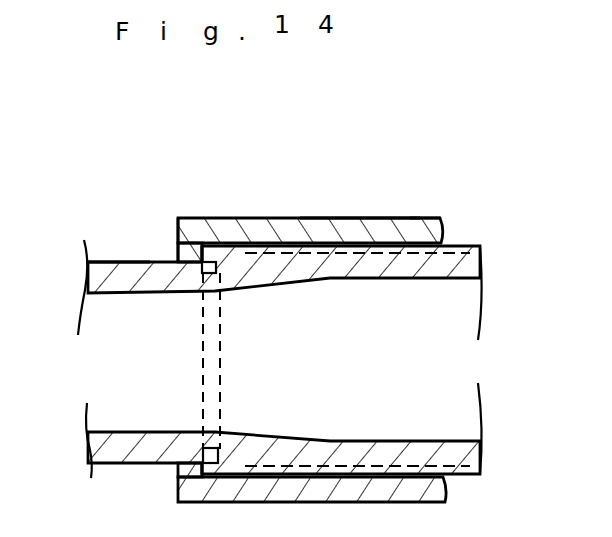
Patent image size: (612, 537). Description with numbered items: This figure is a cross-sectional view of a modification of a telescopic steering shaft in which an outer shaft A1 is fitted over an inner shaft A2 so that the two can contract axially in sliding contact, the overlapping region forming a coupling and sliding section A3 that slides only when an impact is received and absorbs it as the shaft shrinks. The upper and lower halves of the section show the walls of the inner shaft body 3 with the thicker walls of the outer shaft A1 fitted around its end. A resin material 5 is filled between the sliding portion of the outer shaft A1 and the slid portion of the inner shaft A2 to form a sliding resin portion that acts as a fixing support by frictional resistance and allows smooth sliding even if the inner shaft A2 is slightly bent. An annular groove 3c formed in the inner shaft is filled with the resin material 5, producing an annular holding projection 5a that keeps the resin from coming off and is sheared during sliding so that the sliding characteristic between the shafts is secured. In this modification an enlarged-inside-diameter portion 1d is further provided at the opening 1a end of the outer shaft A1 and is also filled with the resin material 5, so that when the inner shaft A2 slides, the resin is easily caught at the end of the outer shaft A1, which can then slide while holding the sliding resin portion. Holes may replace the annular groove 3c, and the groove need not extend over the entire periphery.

The opening 1a is at (177, 255).
The enlarged-inside-diameter portion 1d is at (181, 247).
The inner shaft body 3 is at (89, 465).
The annular groove 3c is at (220, 291).
The resin material 5 is at (245, 218).
The annular holding projection 5a is at (195, 282).
The outer shaft A1 is at (416, 214).
The inner shaft A2 is at (93, 258).
The coupling and sliding section A3 is at (360, 216).